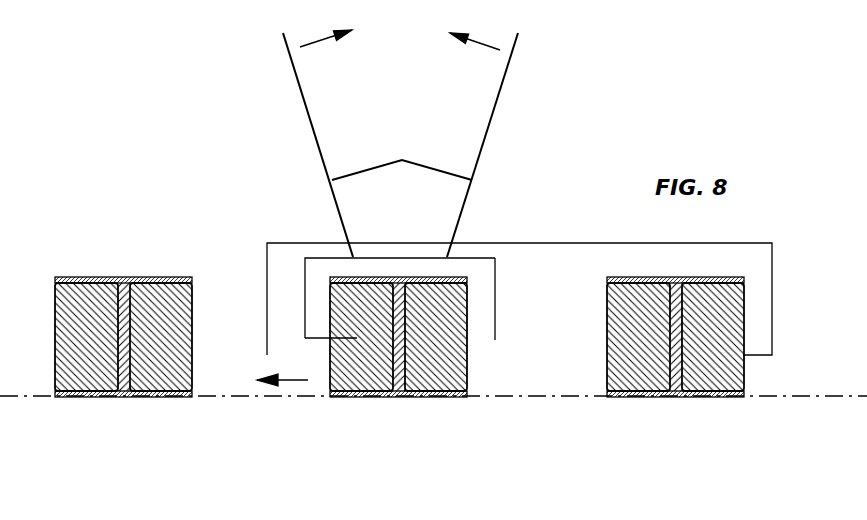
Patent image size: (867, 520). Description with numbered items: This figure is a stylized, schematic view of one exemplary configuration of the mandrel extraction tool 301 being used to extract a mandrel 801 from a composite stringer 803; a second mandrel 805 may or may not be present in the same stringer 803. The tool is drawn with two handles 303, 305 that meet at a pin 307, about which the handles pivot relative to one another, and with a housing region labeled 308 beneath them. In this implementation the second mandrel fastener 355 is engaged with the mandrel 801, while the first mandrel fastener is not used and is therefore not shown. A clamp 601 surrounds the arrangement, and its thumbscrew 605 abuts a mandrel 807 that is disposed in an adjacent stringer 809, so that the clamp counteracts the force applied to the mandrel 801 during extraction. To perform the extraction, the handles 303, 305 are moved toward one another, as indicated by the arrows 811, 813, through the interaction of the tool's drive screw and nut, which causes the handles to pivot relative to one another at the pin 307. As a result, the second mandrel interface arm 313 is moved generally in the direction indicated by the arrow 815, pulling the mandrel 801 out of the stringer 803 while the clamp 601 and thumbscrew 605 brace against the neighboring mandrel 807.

The mandrel extraction tool 301 is at (406, 145).
The handle 303 is at (303, 108).
The handle 305 is at (500, 97).
The pin 307 is at (402, 160).
The gripper housing 308 is at (305, 283).
The second mandrel interface arm 313 is at (497, 286).
The second mandrel fastener 355 is at (323, 340).
The clamp 601 is at (268, 243).
The thumbscrew 605 is at (747, 357).
The mandrel 801 is at (361, 337).
The stringer 803 is at (402, 397).
The mandrel 805 is at (436, 337).
The mandrel 807 is at (717, 373).
The stringer 809 is at (668, 396).
The arrow 811 is at (325, 37).
The arrow 813 is at (485, 42).
The arrow 815 is at (285, 382).